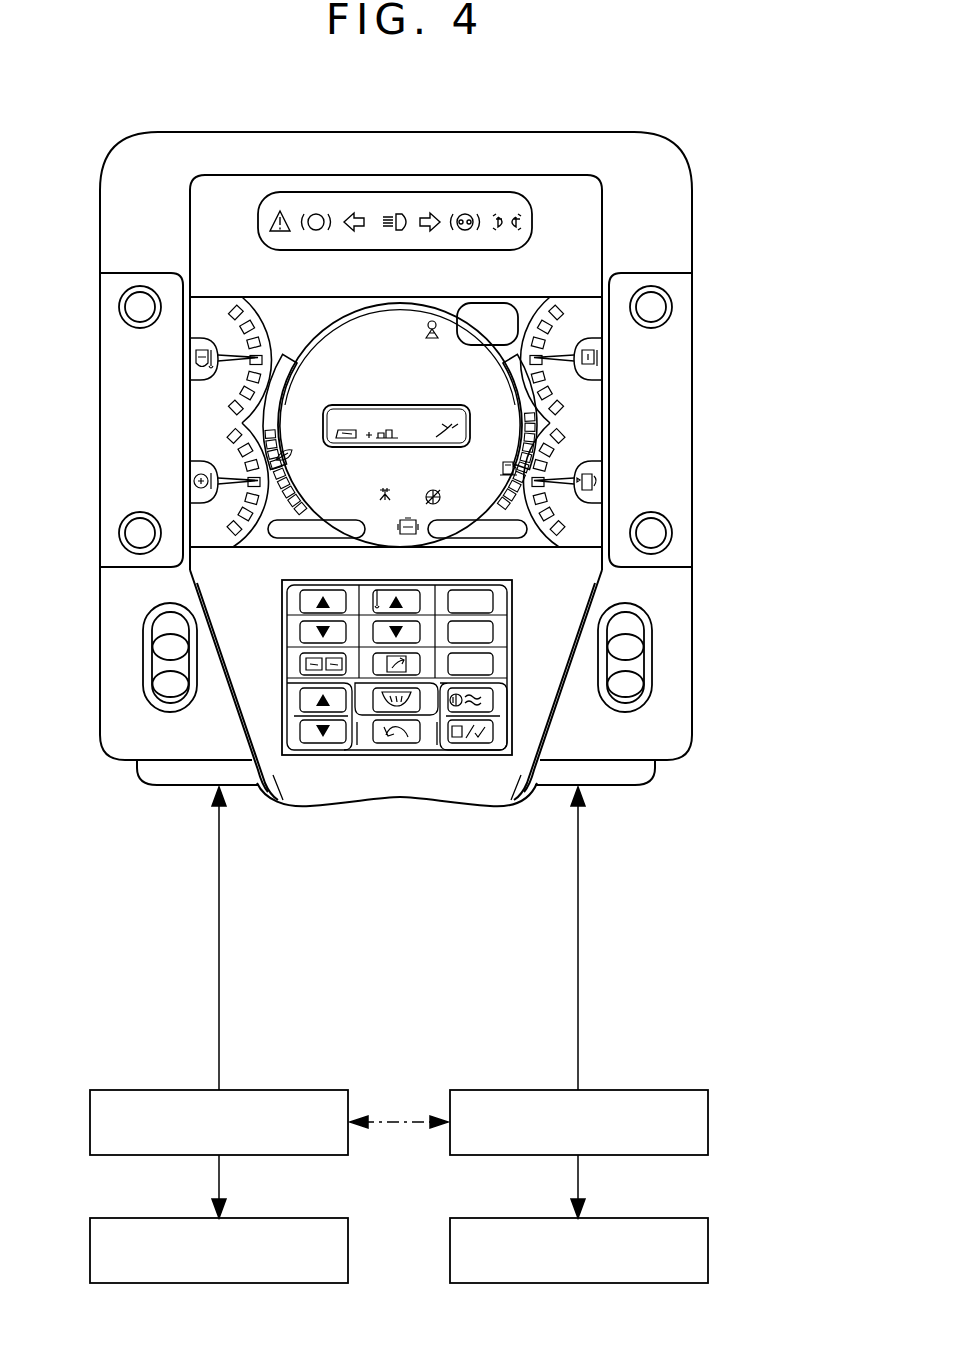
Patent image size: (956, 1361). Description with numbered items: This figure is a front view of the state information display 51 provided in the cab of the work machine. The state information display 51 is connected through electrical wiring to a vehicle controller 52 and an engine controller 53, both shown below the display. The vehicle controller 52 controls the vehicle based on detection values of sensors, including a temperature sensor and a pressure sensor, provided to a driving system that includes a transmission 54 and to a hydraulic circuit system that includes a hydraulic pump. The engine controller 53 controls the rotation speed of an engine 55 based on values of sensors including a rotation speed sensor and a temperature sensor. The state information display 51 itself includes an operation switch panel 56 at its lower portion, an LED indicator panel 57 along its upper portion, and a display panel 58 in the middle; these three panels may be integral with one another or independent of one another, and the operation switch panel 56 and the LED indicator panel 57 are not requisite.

The state information display 51 is at (692, 300).
The vehicle controller 52 is at (282, 1090).
The engine controller 53 is at (640, 1090).
The transmission 54 is at (282, 1218).
The engine 55 is at (640, 1218).
The operation switch panel 56 is at (512, 718).
The LED indicator panel 57 is at (387, 192).
The display panel 58 is at (537, 297).